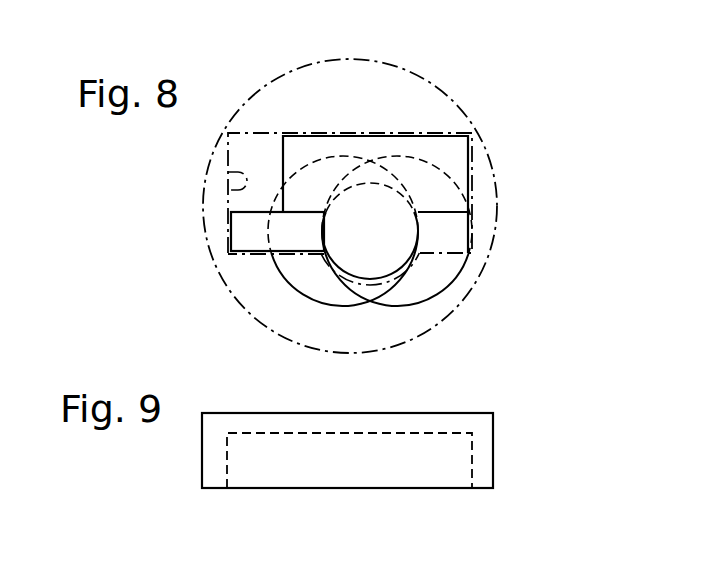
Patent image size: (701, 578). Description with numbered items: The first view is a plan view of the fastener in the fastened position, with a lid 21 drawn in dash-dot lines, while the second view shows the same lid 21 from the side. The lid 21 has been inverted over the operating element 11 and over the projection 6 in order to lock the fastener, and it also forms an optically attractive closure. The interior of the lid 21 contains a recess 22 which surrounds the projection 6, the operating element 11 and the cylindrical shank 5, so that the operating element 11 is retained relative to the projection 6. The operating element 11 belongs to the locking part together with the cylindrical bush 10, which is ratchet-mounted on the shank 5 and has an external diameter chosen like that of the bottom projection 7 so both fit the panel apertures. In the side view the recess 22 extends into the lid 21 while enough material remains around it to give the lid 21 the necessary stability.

In FIG. 8, the lid 21 is at (407, 66).
In FIG. 9, the lid 21 is at (478, 427).
In FIG. 8, the recess 22 is at (228, 173).
In FIG. 9, the recess 22 is at (386, 456).
In FIG. 8, the projection 6 is at (450, 155).
In FIG. 8, the operating element 11 is at (258, 233).
In FIG. 8, the cylindrical bush 10 is at (312, 272).
In FIG. 8, the bottom projection 7 is at (437, 275).
In FIG. 8, the cylindrical shank 5 is at (378, 247).